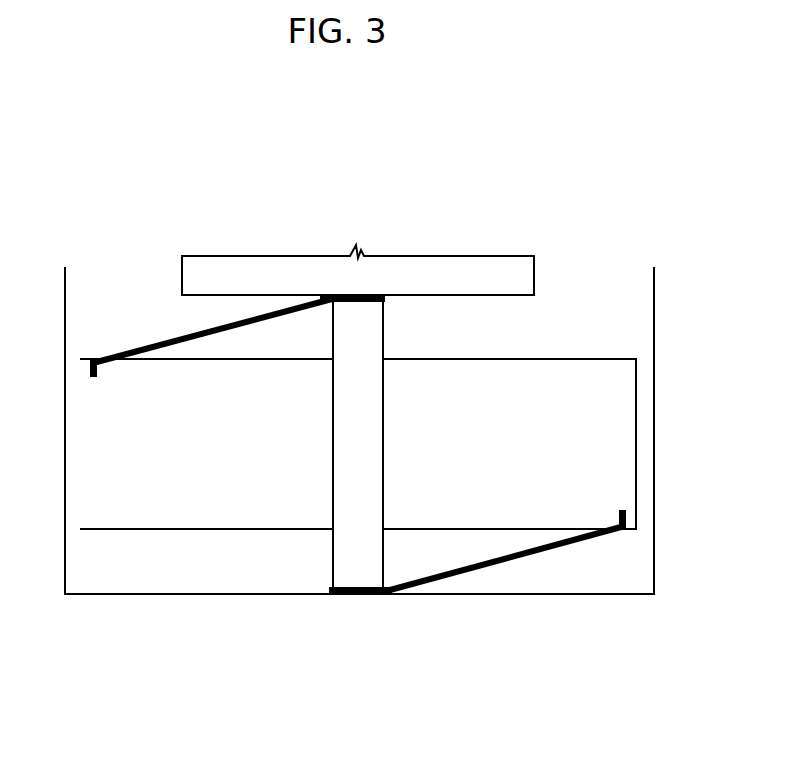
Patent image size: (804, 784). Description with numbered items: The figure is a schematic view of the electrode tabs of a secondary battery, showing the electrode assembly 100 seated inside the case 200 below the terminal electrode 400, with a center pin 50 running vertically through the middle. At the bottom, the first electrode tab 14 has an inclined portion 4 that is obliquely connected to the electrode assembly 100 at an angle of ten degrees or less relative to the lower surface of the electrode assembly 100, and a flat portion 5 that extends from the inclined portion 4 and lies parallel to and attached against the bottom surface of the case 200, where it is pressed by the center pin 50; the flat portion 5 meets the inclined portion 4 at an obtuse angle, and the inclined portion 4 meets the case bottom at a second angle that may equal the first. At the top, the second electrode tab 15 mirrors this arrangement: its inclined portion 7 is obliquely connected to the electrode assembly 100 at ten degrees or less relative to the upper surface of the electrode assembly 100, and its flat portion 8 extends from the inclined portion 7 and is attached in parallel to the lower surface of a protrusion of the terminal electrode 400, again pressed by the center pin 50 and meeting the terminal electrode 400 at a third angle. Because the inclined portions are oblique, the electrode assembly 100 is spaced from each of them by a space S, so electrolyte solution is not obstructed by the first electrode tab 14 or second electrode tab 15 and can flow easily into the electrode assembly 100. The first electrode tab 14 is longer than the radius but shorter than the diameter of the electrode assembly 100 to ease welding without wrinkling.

The electrode assembly 100 is at (165, 530).
The case 200 is at (222, 595).
The terminal electrode 400 is at (495, 268).
The center pin 50 is at (377, 320).
The second electrode tab 15 is at (237, 277).
The inclined portion 7 is at (281, 308).
The flat portion 8 is at (338, 295).
The first electrode tab 14 is at (477, 596).
The flat portion 5 is at (355, 594).
The inclined portion 4 is at (508, 577).
The space S is at (262, 345).